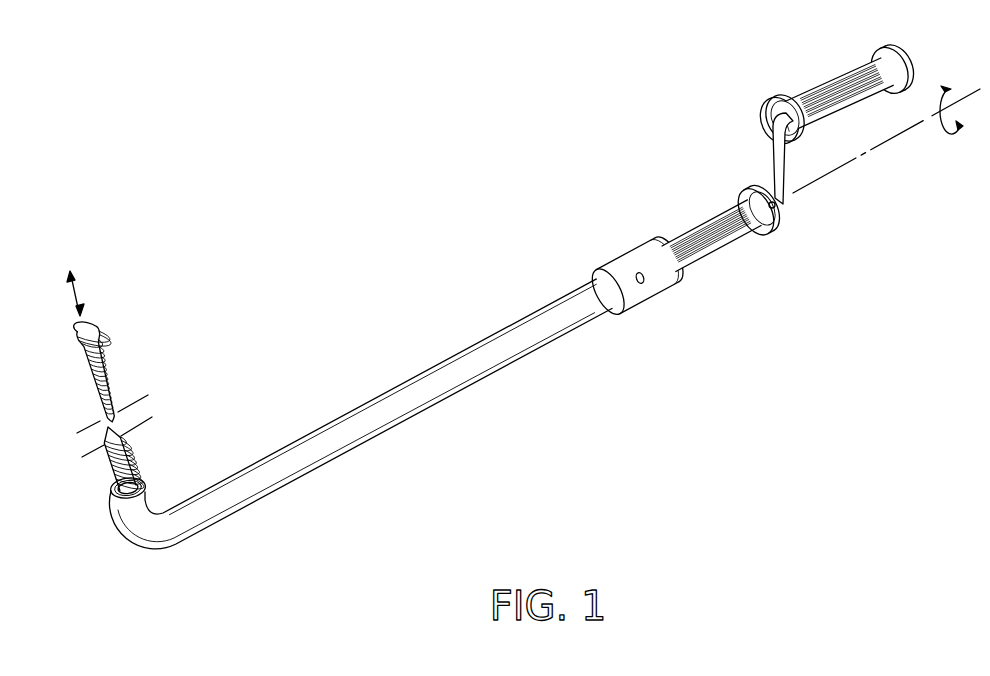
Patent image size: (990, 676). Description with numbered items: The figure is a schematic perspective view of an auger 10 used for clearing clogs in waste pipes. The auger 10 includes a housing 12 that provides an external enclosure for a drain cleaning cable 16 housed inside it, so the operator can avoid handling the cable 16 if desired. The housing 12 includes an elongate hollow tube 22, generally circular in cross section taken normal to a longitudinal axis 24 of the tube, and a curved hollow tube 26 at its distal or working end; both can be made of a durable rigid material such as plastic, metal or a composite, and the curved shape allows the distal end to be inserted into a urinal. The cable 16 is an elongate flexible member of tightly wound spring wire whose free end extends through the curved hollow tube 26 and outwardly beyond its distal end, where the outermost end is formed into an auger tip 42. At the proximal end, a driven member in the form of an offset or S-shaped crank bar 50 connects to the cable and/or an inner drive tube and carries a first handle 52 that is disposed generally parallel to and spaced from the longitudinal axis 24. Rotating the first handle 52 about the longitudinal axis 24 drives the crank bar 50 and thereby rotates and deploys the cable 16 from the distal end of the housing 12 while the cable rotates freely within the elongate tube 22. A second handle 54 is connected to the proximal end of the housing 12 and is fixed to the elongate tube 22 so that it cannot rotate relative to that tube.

The auger 10 is at (523, 312).
The housing 12 is at (394, 453).
The drain cleaning cable 16 is at (138, 474).
The elongate hollow tube 22 is at (224, 513).
The longitudinal axis 24 is at (892, 148).
The curved hollow tube 26 is at (143, 547).
The auger tip 42 is at (88, 326).
The crank bar 50 is at (775, 167).
The first handle 52 is at (837, 87).
The second handle 54 is at (700, 232).